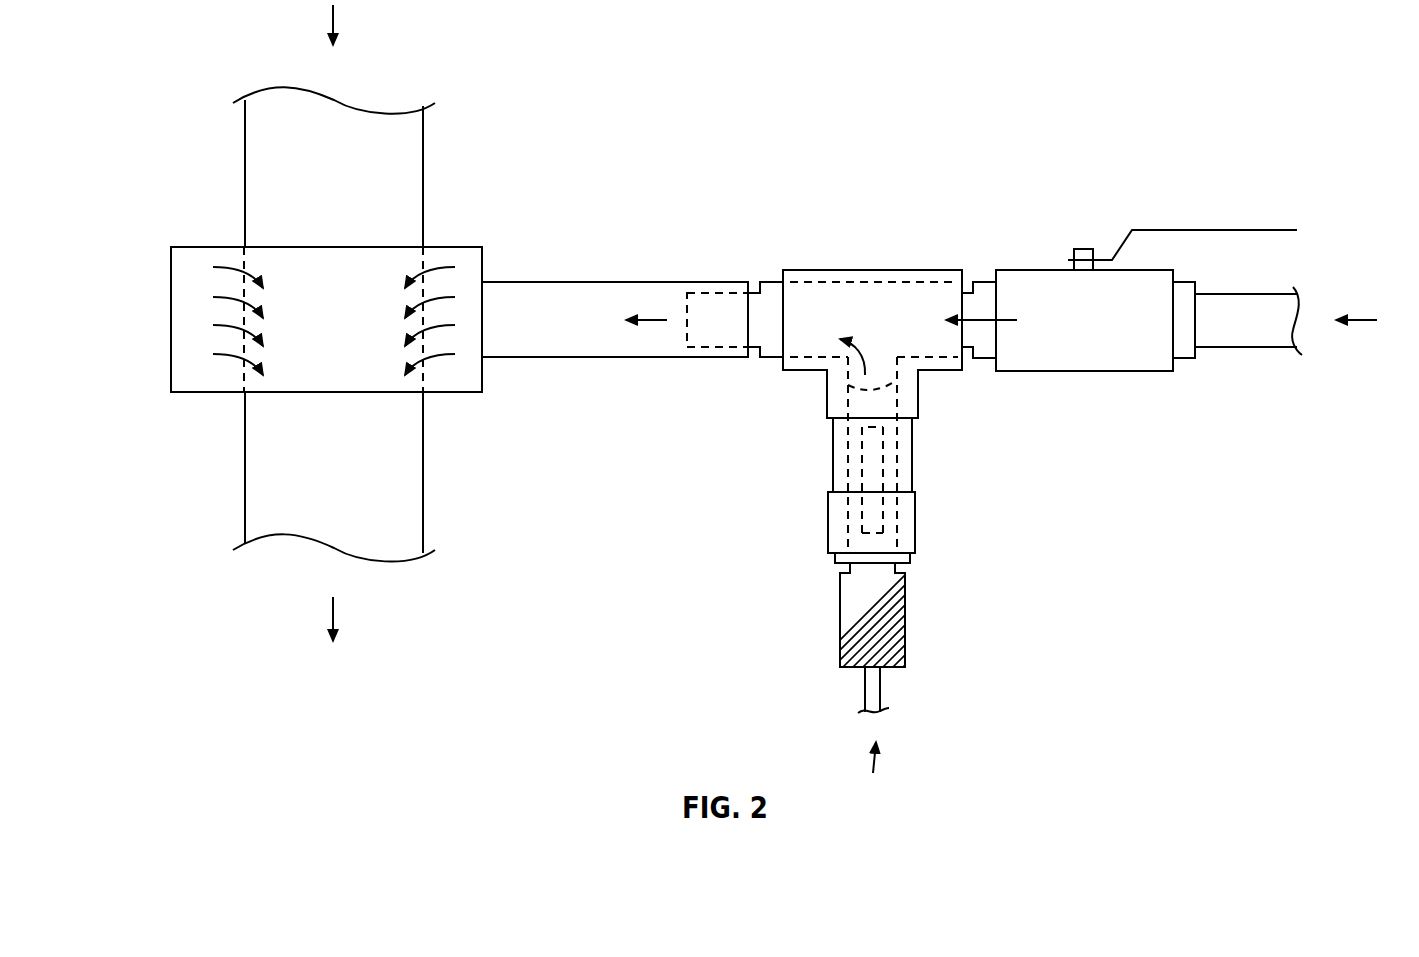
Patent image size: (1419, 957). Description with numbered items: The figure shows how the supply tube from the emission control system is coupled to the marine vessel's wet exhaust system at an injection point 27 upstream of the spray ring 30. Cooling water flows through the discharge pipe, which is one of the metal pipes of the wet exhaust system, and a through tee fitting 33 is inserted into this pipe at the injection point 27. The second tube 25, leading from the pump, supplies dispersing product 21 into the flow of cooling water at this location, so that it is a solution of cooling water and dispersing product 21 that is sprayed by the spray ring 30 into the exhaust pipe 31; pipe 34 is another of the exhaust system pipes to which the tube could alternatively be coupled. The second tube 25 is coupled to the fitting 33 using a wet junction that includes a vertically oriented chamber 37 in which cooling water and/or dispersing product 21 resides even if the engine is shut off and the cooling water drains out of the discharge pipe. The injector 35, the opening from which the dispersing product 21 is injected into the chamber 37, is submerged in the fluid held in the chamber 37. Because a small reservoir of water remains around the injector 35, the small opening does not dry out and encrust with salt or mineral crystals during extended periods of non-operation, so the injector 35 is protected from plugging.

The dispersing product 21 is at (878, 750).
The second tube 25 is at (880, 685).
The injection point 27 is at (900, 248).
The spray ring 30 is at (171, 318).
The exhaust pipe 31 is at (245, 482).
The through tee fitting 33 is at (827, 398).
The pipe 34 is at (245, 187).
The injector 35 is at (882, 450).
The chamber 37 is at (897, 381).